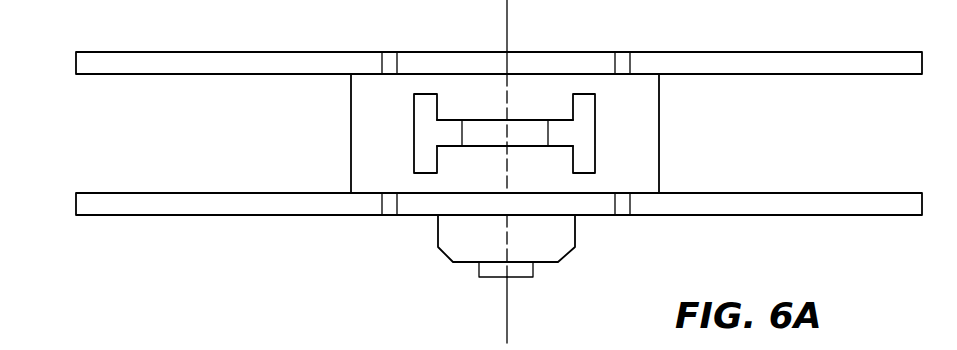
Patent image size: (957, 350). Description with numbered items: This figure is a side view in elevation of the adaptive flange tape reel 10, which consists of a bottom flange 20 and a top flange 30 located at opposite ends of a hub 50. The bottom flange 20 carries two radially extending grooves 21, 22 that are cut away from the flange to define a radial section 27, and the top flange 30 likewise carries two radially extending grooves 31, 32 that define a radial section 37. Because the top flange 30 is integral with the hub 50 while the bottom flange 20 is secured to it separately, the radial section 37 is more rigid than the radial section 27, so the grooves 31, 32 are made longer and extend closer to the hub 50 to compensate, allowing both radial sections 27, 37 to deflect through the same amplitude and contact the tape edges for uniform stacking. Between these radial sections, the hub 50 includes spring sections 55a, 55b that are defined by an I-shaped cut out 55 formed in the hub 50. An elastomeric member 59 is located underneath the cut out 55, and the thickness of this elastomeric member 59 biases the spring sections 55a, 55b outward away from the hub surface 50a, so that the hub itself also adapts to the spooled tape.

The adaptive flange tape reel 10 is at (101, 233).
The bottom flange 20 is at (166, 62).
The radially extending groove 21 is at (626, 58).
The radially extending groove 22 is at (391, 58).
The radial section 27 is at (540, 57).
The top flange 30 is at (206, 207).
The radially extending groove 31 is at (626, 207).
The radially extending groove 32 is at (388, 210).
The radial section 37 is at (551, 210).
The hub 50 is at (361, 164).
The hub surface 50a is at (637, 162).
The I shaped cut out 55 is at (577, 128).
The spring section 55a is at (563, 110).
The spring section 55b is at (561, 183).
The elastomeric member 59 is at (473, 132).